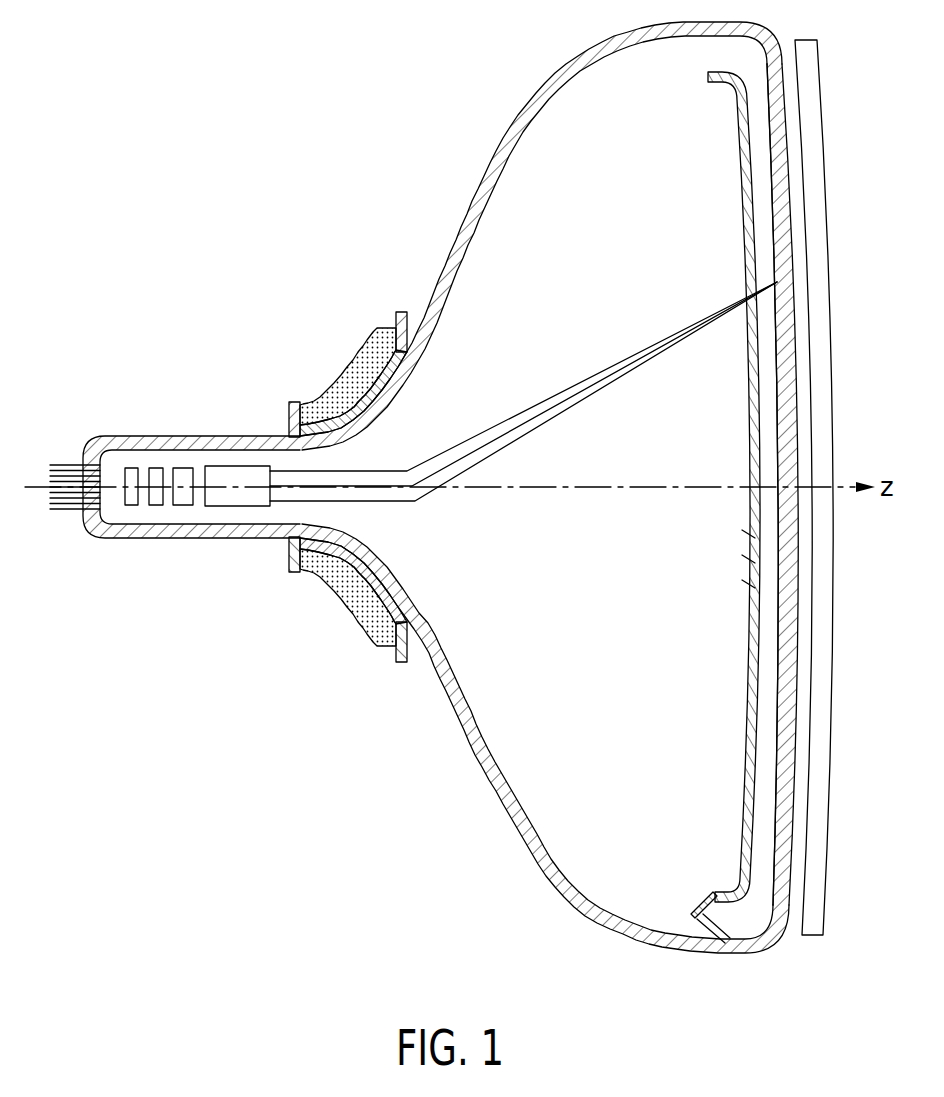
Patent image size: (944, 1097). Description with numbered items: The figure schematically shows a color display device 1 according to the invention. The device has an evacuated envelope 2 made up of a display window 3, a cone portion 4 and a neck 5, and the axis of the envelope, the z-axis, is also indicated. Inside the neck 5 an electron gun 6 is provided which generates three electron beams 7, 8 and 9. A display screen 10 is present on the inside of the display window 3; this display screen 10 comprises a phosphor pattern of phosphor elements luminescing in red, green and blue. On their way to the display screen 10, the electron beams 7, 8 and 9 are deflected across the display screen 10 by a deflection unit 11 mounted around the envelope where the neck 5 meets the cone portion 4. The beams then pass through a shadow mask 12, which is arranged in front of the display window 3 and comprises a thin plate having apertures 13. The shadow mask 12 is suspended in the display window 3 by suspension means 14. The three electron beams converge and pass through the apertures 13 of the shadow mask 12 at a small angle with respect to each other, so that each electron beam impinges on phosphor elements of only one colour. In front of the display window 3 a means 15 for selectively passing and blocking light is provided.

The color display device 1 is at (466, 119).
The evacuated envelope 2 is at (404, 766).
The display window 3 is at (778, 738).
The cone portion 4 is at (520, 832).
The neck 5 is at (225, 445).
The electron gun 6 is at (181, 467).
The electron beam 7 is at (563, 412).
The electron beam 8 is at (510, 430).
The electron beam 9 is at (484, 432).
The display screen 10 is at (777, 608).
The deflection unit 11 is at (343, 585).
The shadow mask 12 is at (746, 668).
The apertures 13 is at (748, 582).
The suspension means 14 is at (702, 905).
The means for selectively passing and blocking light 15 is at (808, 53).